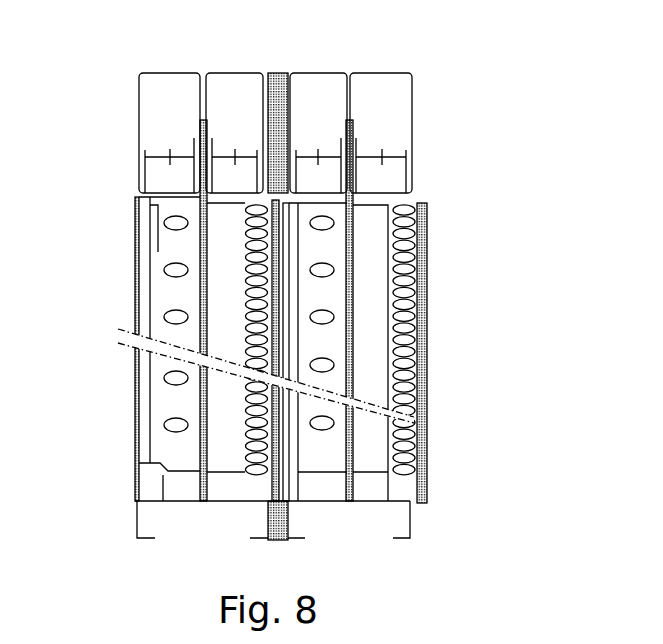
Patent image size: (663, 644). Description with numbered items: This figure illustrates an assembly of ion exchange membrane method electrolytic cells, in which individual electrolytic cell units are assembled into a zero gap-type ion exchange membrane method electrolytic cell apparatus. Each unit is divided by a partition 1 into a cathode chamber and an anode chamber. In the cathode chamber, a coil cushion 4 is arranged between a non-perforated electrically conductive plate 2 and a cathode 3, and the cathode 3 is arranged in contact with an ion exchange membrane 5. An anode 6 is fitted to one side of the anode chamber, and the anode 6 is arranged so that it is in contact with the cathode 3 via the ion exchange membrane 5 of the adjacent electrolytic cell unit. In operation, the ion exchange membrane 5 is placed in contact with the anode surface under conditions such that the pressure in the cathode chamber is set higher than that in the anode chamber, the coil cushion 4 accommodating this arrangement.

The partition 1 is at (199, 232).
The electrically conductive plate 2 is at (241, 273).
The cathode 3 is at (269, 317).
The coil cushion 4 is at (258, 355).
The ion exchange membrane 5 is at (274, 394).
The anode 6 is at (135, 446).